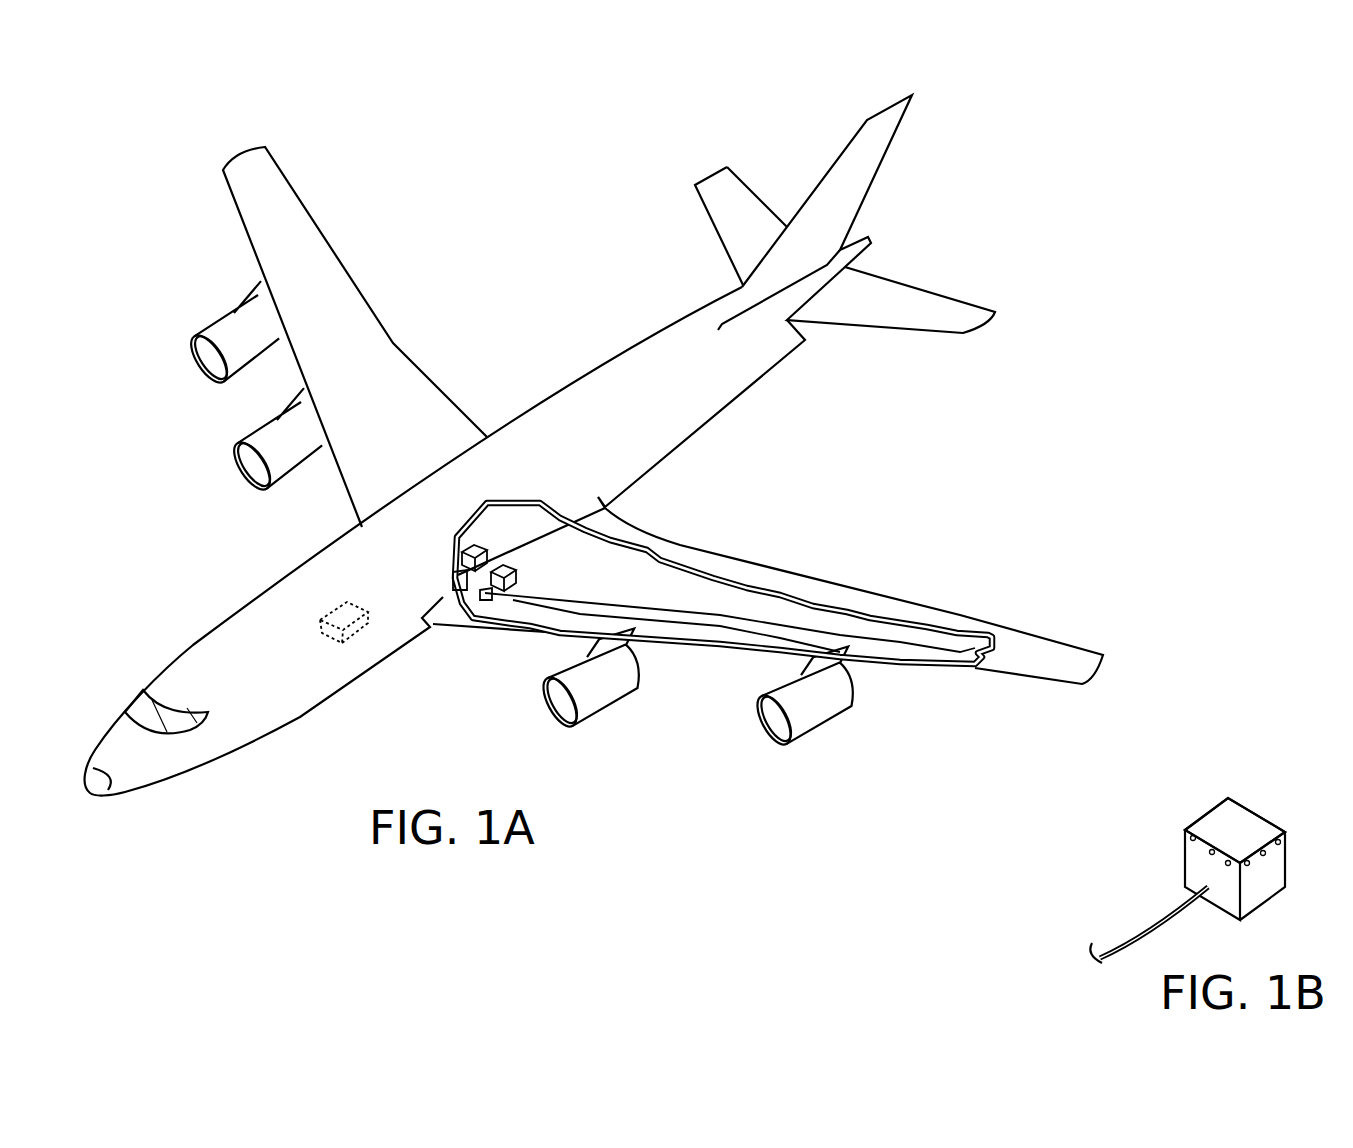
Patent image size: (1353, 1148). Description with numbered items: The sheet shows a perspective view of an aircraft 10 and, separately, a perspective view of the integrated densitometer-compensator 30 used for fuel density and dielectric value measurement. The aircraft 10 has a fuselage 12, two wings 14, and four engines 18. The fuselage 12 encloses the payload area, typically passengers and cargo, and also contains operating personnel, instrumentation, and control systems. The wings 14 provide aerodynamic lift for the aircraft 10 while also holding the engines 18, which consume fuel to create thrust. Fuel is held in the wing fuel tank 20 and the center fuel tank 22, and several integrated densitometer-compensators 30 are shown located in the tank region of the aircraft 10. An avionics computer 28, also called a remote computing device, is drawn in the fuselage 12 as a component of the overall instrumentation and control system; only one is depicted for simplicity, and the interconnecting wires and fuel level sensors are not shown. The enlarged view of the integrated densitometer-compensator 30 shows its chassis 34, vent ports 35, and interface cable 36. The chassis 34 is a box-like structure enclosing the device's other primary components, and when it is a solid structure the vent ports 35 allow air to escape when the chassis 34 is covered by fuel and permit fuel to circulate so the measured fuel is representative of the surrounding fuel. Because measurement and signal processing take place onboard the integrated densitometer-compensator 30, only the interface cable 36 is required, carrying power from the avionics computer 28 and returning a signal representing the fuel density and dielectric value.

In FIG. 1A, the aircraft 10 is at (165, 170).
In FIG. 1A, the fuselage 12 is at (258, 635).
In FIG. 1A, the wings 14 is at (337, 290).
In FIG. 1A, the engines 18 is at (270, 437).
In FIG. 1A, the wing fuel tank 20 is at (650, 590).
In FIG. 1A, the center fuel tank 22 is at (515, 527).
In FIG. 1A, the avionics computer 28 is at (360, 633).
In FIG. 1A, the integrated densitometer-compensator 30 is at (457, 535).
In FIG. 1B, the integrated densitometer-compensator 30 is at (1282, 809).
In FIG. 1B, the chassis 34 is at (1207, 812).
In FIG. 1B, the vent ports 35 is at (1185, 850).
In FIG. 1B, the interface cable 36 is at (1125, 943).